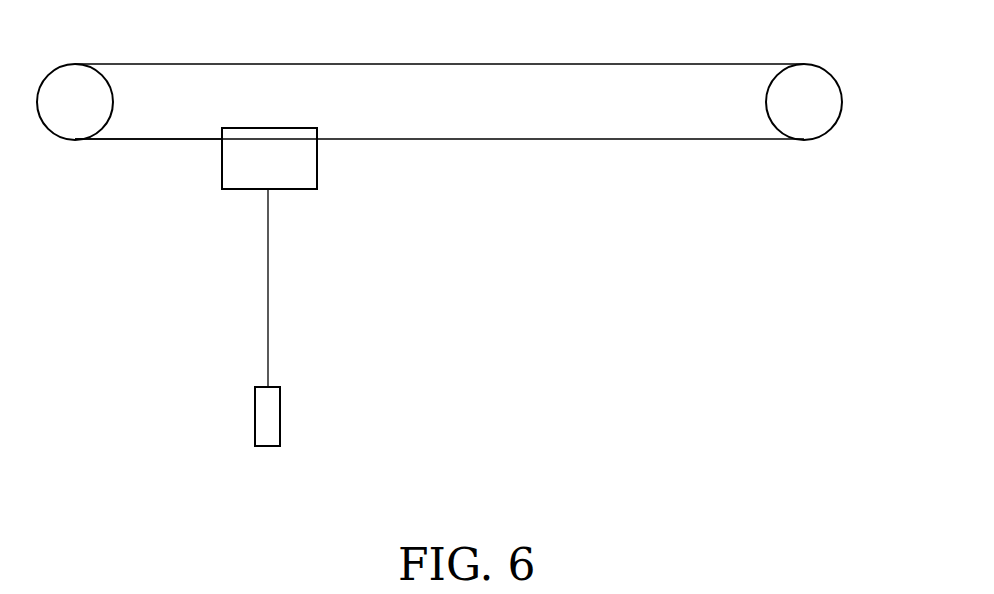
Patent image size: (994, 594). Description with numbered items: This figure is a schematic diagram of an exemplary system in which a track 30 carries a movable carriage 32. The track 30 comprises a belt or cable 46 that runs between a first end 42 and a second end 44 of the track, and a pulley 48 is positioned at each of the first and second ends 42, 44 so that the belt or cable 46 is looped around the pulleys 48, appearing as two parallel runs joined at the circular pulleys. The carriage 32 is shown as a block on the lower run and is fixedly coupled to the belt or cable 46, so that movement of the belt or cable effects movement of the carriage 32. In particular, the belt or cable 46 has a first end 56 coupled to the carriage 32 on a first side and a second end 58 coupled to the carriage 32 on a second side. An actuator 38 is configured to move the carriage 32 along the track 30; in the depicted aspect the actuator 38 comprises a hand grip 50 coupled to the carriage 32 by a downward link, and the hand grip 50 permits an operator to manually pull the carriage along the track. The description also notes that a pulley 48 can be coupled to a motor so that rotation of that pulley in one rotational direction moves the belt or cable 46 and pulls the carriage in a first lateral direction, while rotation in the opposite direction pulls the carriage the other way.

The track 30 is at (155, 139).
The carriage 32 is at (242, 188).
The actuator 38 is at (257, 388).
The first end 42 is at (120, 85).
The second end 44 is at (858, 113).
The belt or cable 46 is at (53, 63).
The pulley 48 is at (91, 105).
The hand grip 50 is at (257, 421).
The first end 56 is at (209, 146).
The second end 58 is at (332, 155).